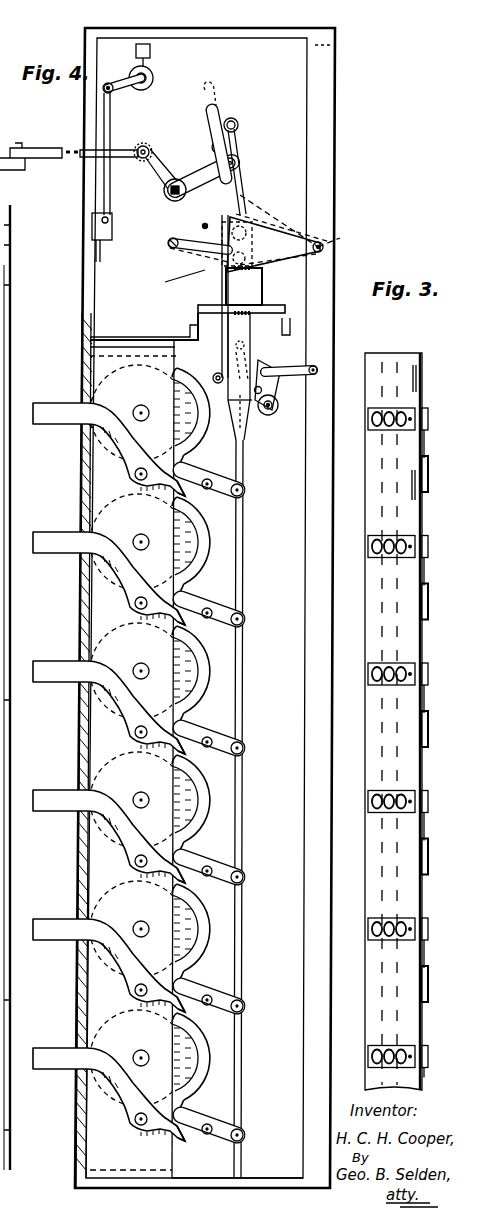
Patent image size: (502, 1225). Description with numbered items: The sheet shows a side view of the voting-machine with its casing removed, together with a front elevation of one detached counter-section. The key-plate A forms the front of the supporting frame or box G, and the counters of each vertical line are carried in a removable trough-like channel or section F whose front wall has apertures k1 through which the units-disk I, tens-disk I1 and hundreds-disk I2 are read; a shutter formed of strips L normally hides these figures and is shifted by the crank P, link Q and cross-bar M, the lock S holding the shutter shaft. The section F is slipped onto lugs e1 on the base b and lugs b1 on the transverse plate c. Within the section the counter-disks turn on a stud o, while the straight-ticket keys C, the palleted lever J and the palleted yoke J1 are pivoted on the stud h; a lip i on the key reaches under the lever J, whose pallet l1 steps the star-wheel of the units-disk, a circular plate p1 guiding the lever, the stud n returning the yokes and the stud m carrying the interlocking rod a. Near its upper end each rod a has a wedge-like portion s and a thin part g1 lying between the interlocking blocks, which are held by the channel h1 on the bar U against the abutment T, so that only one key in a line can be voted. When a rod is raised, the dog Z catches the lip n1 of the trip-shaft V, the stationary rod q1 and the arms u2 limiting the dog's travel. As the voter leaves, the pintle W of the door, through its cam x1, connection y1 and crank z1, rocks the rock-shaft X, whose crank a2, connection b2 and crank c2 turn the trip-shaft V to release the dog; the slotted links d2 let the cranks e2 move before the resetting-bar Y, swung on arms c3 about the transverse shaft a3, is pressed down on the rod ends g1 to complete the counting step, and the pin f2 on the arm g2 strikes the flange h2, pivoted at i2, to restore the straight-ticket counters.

In FIG. 4, the straight-ticket key C is at (52, 426).
In FIG. 3, the straight-ticket key C is at (430, 416).
In FIG. 4, the key-plate A is at (80, 468).
In FIG. 4, the removable channel or section F is at (138, 759).
In FIG. 3, the removable channel or section F is at (410, 514).
In FIG. 4, the stud o is at (146, 730).
In FIG. 4, the projecting lip i is at (192, 504).
In FIG. 4, the stud m is at (244, 1008).
In FIG. 4, the stud h is at (134, 603).
In FIG. 4, the stud n is at (207, 608).
In FIG. 4, the shutter strip L is at (93, 290).
In FIG. 4, the palleted yoke J1 is at (198, 656).
In FIG. 4, the palleted lever J is at (210, 744).
In FIG. 4, the interlocking rod a is at (244, 652).
In FIG. 4, the circular plate p1 is at (198, 802).
In FIG. 4, the lug e1 is at (120, 1170).
In FIG. 4, the base b is at (222, 1188).
In FIG. 4, the transverse plate c is at (88, 347).
In FIG. 4, the lug b1 is at (88, 356).
In FIG. 4, the lock S is at (151, 50).
In FIG. 4, the crank P is at (130, 76).
In FIG. 4, the link Q is at (112, 186).
In FIG. 4, the cross-bar M is at (104, 248).
In FIG. 4, the shaft or pintle W is at (8, 180).
In FIG. 4, the connection y1 is at (66, 148).
In FIG. 4, the cam or crank x1 is at (6, 124).
In FIG. 4, the crank z1 is at (172, 162).
In FIG. 4, the rock-shaft X is at (168, 198).
In FIG. 4, the crank e2 is at (198, 160).
In FIG. 4, the pin f2 is at (236, 165).
In FIG. 4, the crank a2 is at (238, 126).
In FIG. 4, the connection b2 is at (240, 146).
In FIG. 4, the slotted link d2 is at (215, 128).
In FIG. 4, the arm g2 is at (208, 215).
In FIG. 4, the arm c3 is at (222, 240).
In FIG. 4, the flange h2 is at (278, 243).
In FIG. 4, the pivot i2 is at (324, 246).
In FIG. 4, the supporting frame or box G is at (336, 236).
In FIG. 4, the transverse shaft a3 is at (187, 250).
In FIG. 4, the resetting-bar Y is at (196, 252).
In FIG. 4, the upper part of interlocking rod g1 is at (179, 281).
In FIG. 4, the channel h1 is at (222, 292).
In FIG. 4, the abutment T is at (250, 294).
In FIG. 4, the bar U is at (289, 328).
In FIG. 4, the wedge-like portion s is at (243, 376).
In FIG. 4, the crank c2 is at (224, 384).
In FIG. 4, the dog Z is at (276, 386).
In FIG. 4, the pallet l1 is at (266, 366).
In FIG. 4, the arm u2 is at (292, 372).
In FIG. 4, the lip n1 is at (286, 403).
In FIG. 4, the trip-shaft V is at (278, 410).
In FIG. 4, the stationary rod q1 is at (256, 420).
In FIG. 3, the aperture k1 is at (368, 412).
In FIG. 3, the units-disk I is at (412, 426).
In FIG. 3, the tens-disk I1 is at (390, 428).
In FIG. 3, the hundreds-disk I2 is at (370, 428).